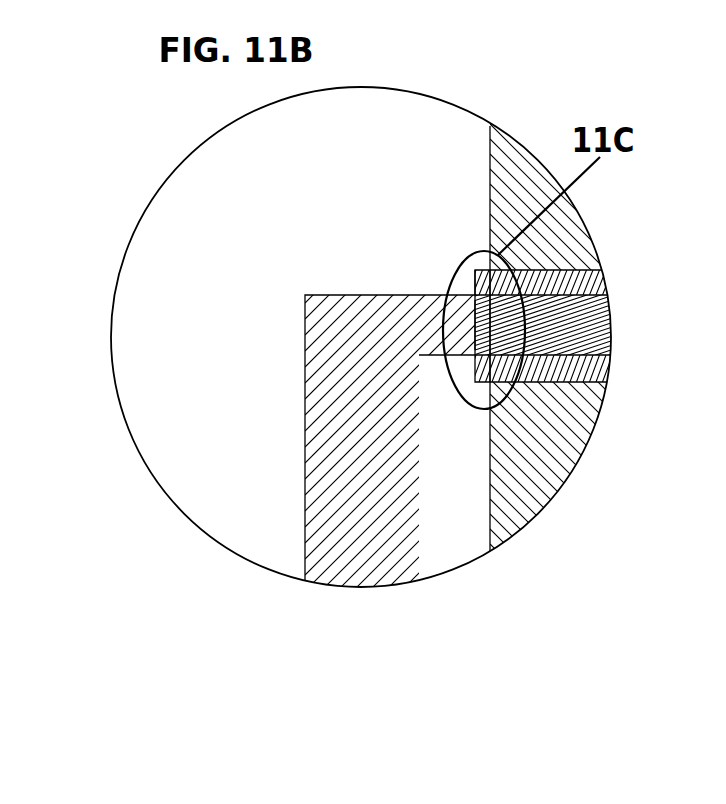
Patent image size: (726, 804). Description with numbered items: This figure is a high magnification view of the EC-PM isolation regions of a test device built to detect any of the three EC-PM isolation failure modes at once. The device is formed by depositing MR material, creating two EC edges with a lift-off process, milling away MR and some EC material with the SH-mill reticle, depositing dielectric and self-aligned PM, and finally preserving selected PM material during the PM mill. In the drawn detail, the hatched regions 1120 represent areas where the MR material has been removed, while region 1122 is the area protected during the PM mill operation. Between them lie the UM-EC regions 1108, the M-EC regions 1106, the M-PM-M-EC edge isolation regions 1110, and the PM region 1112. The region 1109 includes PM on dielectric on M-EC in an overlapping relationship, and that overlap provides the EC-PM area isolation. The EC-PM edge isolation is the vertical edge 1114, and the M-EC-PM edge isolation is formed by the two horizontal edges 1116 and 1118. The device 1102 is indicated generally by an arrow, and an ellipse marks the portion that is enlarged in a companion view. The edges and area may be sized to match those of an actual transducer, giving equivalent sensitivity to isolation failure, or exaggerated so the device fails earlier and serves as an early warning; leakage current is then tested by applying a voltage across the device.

The connector assembly 1102 is at (465, 190).
The regions where MR material is removed 1120 is at (525, 172).
The region protected during the PM mill operation 1122 is at (365, 362).
The M-EC regions 1106 is at (580, 288).
The UM-EC regions 1108 is at (572, 330).
The horizontal edge 1116 is at (501, 302).
The horizontal edge 1118 is at (501, 350).
The vertical edge 1114 is at (480, 310).
The region including PM on dielectric on M-EC 1109 is at (474, 319).
The M-PM-M-EC edge isolation regions 1110 is at (452, 270).
The PM region 1112 is at (480, 332).